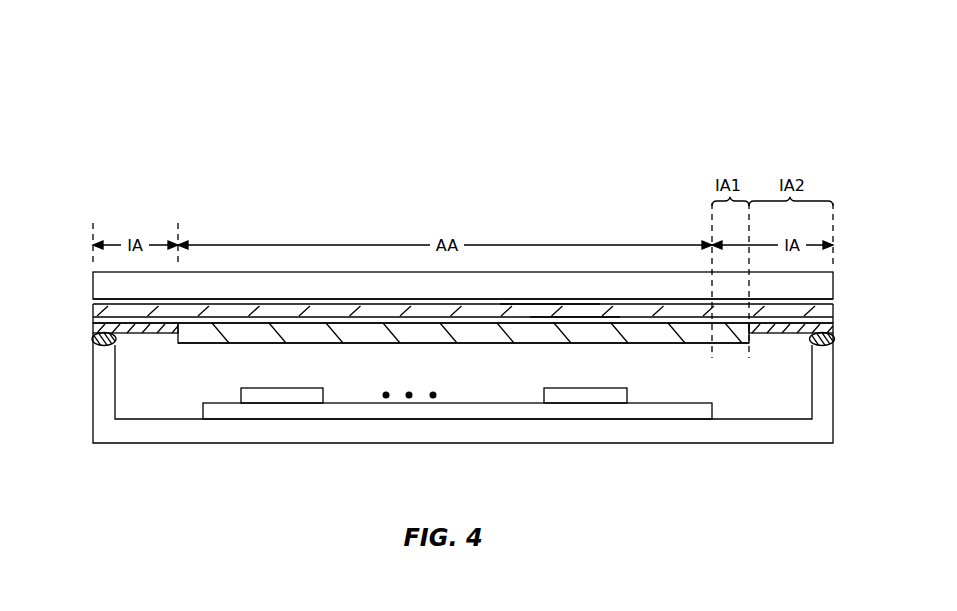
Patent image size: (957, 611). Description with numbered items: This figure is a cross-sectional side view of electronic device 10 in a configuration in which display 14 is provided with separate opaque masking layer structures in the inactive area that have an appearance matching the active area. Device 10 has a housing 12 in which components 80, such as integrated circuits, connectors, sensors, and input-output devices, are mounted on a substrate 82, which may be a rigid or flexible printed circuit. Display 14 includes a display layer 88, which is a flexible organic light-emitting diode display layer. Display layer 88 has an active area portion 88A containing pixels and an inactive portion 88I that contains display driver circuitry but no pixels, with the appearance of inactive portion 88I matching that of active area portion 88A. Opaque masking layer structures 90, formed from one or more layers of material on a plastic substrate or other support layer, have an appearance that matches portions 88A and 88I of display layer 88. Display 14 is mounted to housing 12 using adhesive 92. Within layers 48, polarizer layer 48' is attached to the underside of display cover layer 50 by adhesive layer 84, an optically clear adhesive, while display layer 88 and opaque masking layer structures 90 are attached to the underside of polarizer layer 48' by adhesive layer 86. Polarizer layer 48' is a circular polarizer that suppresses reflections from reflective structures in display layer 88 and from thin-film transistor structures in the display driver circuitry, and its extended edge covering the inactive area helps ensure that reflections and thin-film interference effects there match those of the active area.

The electronic device 10 is at (707, 73).
The housing 12 is at (215, 432).
The display 14 is at (351, 163).
The layers 48 is at (444, 313).
The polarizer layer 48' is at (495, 300).
The display cover layer 50 is at (830, 287).
The components 80 is at (276, 395).
The substrate 82 is at (471, 412).
The adhesive layer 84 is at (538, 304).
The adhesive layer 86 is at (570, 320).
The display layer 88 is at (197, 354).
The active area portion 88A is at (663, 343).
The inactive portion 88I is at (732, 343).
The opaque masking layer structures 90 is at (93, 330).
The adhesive 92 is at (93, 339).